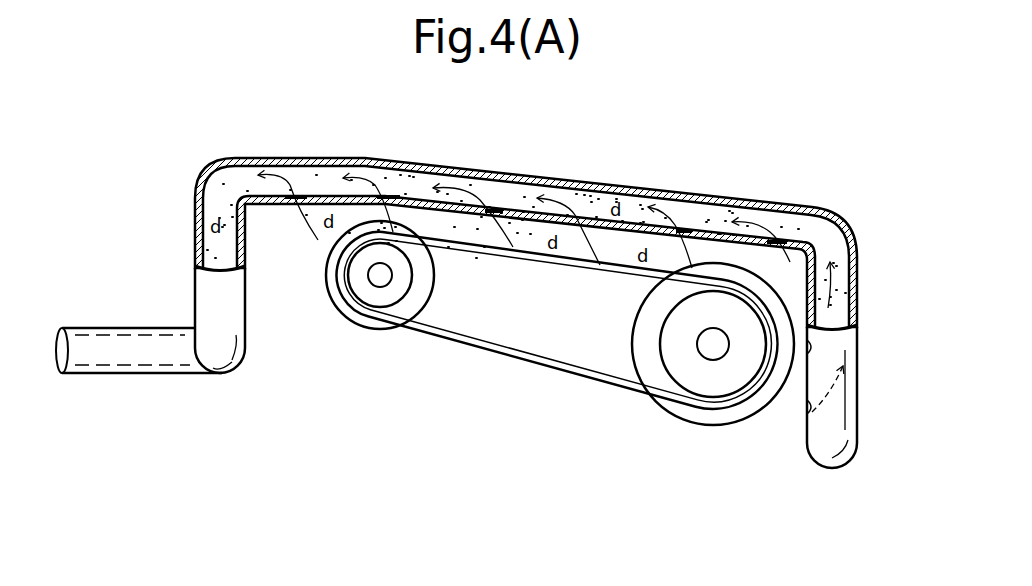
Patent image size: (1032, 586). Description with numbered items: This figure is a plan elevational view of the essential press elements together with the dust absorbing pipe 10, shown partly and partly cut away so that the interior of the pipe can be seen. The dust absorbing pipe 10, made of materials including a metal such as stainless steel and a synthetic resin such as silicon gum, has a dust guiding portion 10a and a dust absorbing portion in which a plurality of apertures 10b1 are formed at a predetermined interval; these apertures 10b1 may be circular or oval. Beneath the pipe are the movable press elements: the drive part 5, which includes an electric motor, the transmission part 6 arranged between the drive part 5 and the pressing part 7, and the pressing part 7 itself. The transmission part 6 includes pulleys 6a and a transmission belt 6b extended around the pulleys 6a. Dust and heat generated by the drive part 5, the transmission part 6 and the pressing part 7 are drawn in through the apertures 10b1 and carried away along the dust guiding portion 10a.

The dust absorbing pipe 10 is at (485, 303).
The dust guiding portion 10a is at (703, 196).
The apertures 10b1 is at (307, 198).
The drive part 5 is at (363, 318).
The transmission part 6 is at (560, 363).
The pulleys 6a is at (402, 280).
The transmission belt 6b is at (557, 320).
The pressing part 7 is at (740, 428).